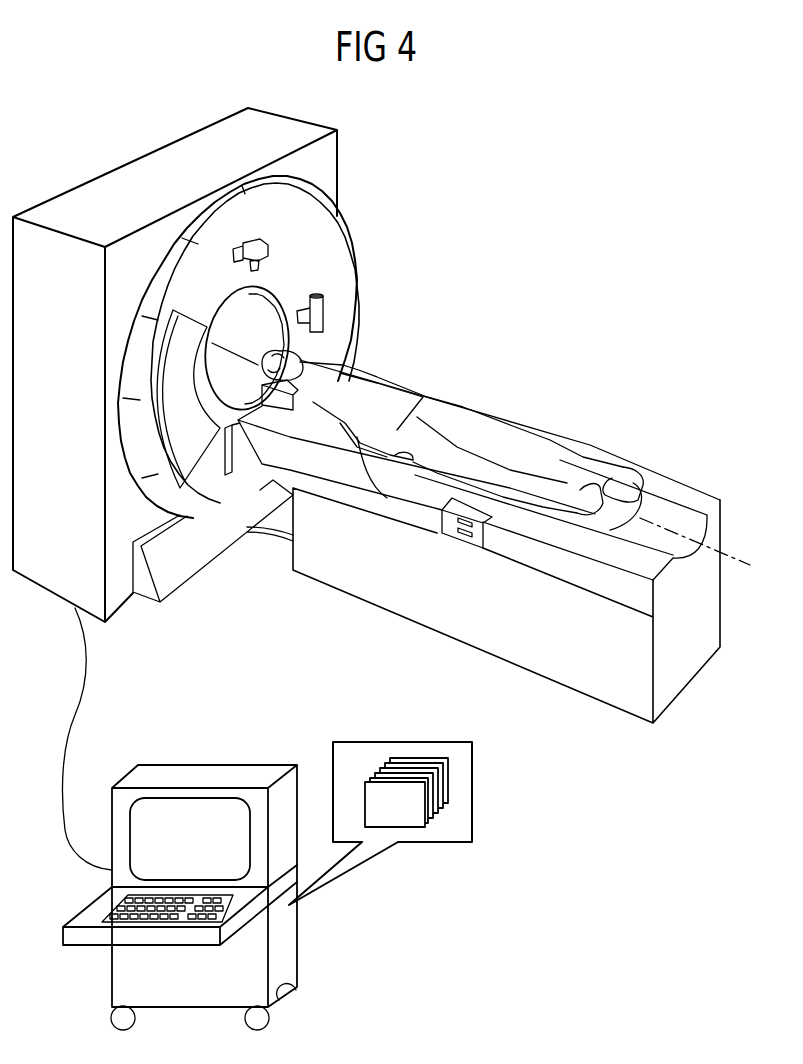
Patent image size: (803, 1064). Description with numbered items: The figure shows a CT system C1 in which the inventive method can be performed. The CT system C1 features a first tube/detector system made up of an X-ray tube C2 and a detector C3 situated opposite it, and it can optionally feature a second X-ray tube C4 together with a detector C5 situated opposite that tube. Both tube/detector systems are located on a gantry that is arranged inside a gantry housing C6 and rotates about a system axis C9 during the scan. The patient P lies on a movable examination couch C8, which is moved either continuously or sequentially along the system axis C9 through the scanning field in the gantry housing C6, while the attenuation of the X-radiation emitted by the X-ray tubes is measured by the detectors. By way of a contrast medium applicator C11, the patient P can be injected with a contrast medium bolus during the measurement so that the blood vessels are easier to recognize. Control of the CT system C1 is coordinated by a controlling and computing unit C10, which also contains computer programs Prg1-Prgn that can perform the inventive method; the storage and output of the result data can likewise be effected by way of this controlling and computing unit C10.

The CT system C1 is at (515, 291).
The X-ray tube C2 is at (272, 246).
The detector C3 is at (242, 465).
The second X-ray tube C4 is at (325, 307).
The detector C5 is at (185, 450).
The gantry housing C6 is at (40, 558).
The examination couch C8 is at (613, 687).
The system axis C9 is at (745, 560).
The controlling and computing unit C10 is at (287, 948).
The contrast medium applicator C11 is at (470, 549).
The patient P is at (377, 388).
The computer programs Prg1-Prgn is at (410, 827).